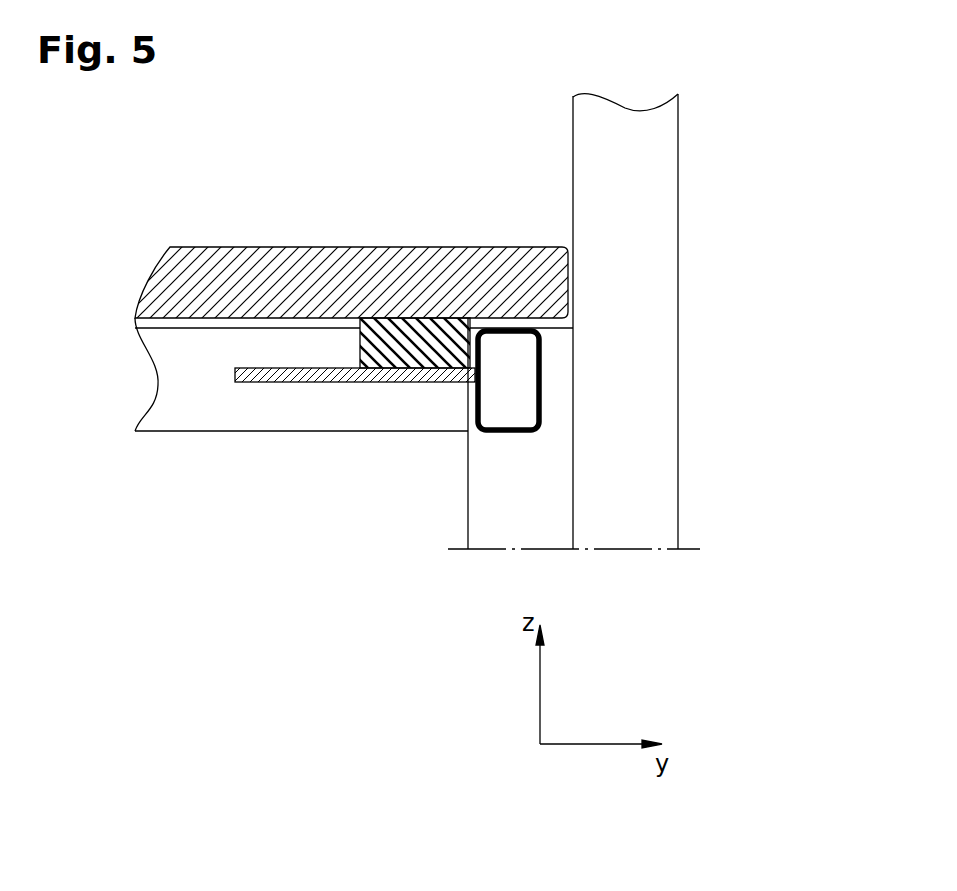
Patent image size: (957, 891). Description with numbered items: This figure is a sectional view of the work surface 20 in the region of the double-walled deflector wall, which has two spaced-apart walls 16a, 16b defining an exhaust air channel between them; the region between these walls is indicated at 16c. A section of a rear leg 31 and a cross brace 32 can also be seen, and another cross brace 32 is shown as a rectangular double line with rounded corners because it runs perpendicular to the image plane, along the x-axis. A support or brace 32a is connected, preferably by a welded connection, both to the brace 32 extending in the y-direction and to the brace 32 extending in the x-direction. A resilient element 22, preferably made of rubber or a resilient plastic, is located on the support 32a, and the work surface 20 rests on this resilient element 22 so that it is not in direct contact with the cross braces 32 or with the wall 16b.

The wall 16a is at (678, 156).
The wall 16b is at (573, 156).
The side wall 16c is at (630, 332).
The work surface 20 is at (346, 270).
The resilient element 22 is at (403, 355).
The rear leg 31 is at (503, 524).
The cross brace 32 is at (185, 405).
The support or brace 32a is at (267, 383).